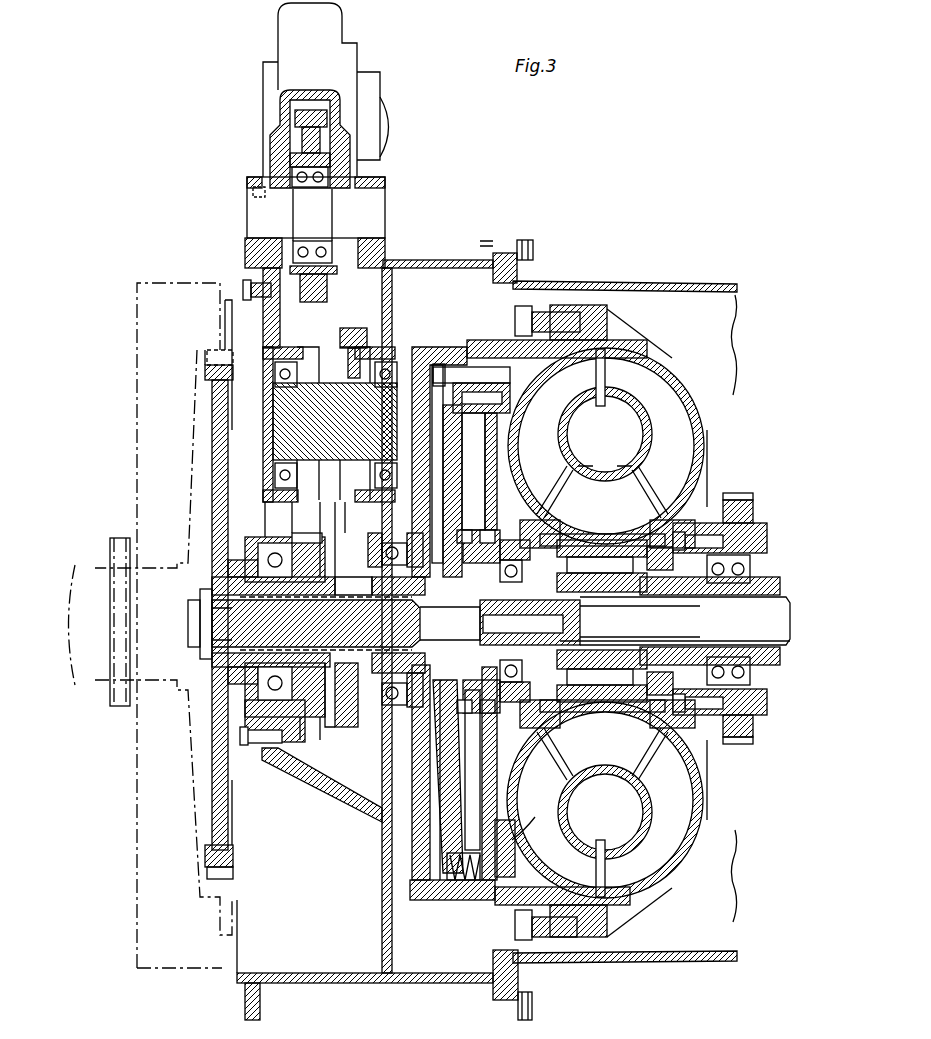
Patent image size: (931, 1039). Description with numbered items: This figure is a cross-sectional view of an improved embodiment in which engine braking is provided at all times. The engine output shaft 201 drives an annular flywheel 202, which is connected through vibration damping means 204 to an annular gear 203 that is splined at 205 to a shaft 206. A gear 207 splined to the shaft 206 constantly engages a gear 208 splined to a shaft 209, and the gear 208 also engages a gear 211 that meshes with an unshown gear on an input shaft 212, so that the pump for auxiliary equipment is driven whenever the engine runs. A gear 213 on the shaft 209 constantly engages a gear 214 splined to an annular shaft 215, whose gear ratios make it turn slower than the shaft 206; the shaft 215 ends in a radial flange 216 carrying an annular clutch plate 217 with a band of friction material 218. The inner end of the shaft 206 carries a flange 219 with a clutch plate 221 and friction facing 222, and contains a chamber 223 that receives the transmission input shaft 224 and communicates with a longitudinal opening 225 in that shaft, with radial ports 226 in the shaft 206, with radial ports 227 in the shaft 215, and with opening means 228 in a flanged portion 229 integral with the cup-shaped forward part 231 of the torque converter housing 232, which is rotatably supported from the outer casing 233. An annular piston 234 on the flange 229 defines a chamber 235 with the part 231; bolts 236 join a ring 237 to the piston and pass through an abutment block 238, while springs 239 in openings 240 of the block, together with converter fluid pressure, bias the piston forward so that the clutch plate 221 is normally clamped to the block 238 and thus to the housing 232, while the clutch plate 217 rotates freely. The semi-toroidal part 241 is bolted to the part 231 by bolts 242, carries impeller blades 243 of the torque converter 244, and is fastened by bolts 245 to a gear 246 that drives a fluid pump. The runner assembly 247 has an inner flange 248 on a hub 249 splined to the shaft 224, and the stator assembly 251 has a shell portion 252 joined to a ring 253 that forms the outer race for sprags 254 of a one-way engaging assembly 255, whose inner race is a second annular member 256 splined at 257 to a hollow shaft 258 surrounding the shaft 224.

The shaft 201 is at (95, 558).
The annular flywheel 202 is at (137, 412).
The annular gear 203 is at (215, 485).
The vibration damping means 204 is at (225, 330).
The spline 205 is at (230, 654).
The shaft 206 is at (235, 620).
The gear 207 is at (320, 722).
The gear 208 is at (335, 423).
The shaft 209 is at (275, 440).
The gear 211 is at (322, 290).
The input shaft 212 is at (395, 110).
The gear 213 is at (355, 330).
The gear 214 is at (355, 740).
The annular shaft 215 is at (318, 602).
The radially extending annular flange 216 is at (463, 525).
The annular clutch plate 217 is at (463, 452).
The annular band of friction material 218 is at (420, 405).
The annular radially extending flange 219 is at (482, 725).
The annular clutch plate 221 is at (500, 790).
The annular friction facing 222 is at (532, 817).
The chamber 223 is at (530, 622).
The transmission input shaft 224 is at (780, 597).
The longitudinally extending opening 225 is at (590, 641).
The radially extending ports 226 is at (432, 612).
The radial ports 227 is at (318, 644).
The opening means 228 is at (334, 542).
The annular flanged portion 229 is at (334, 701).
The cup shaped forward part 231 is at (420, 848).
The torque converter housing 232 is at (605, 918).
The outer casing 233 is at (435, 258).
The annular piston 234 is at (435, 807).
The chamber 235 is at (430, 873).
The bolts 236 is at (470, 348).
The ring 237 is at (545, 393).
The abutment block 238 is at (485, 900).
The springs 239 is at (450, 898).
The openings 240 is at (465, 900).
The semi-toroidal part 241 is at (668, 372).
The bolts 242 is at (583, 327).
The impeller blades 243 is at (688, 440).
The torque converter 244 is at (605, 415).
The bolts 245 is at (763, 532).
The gear 246 is at (757, 512).
The vaned runner assembly 247 is at (575, 450).
The inner flange 248 is at (548, 517).
The annular hub 249 is at (562, 720).
The vaned stator assembly 251 is at (607, 799).
The shell portion 252 is at (647, 522).
The ring 253 is at (592, 545).
The tiltable sprags or grippers 254 is at (606, 691).
The one-way engaging assembly 255 is at (640, 596).
The second annular member 256 is at (650, 648).
The spline 257 is at (597, 592).
The hollow shaft 258 is at (780, 660).